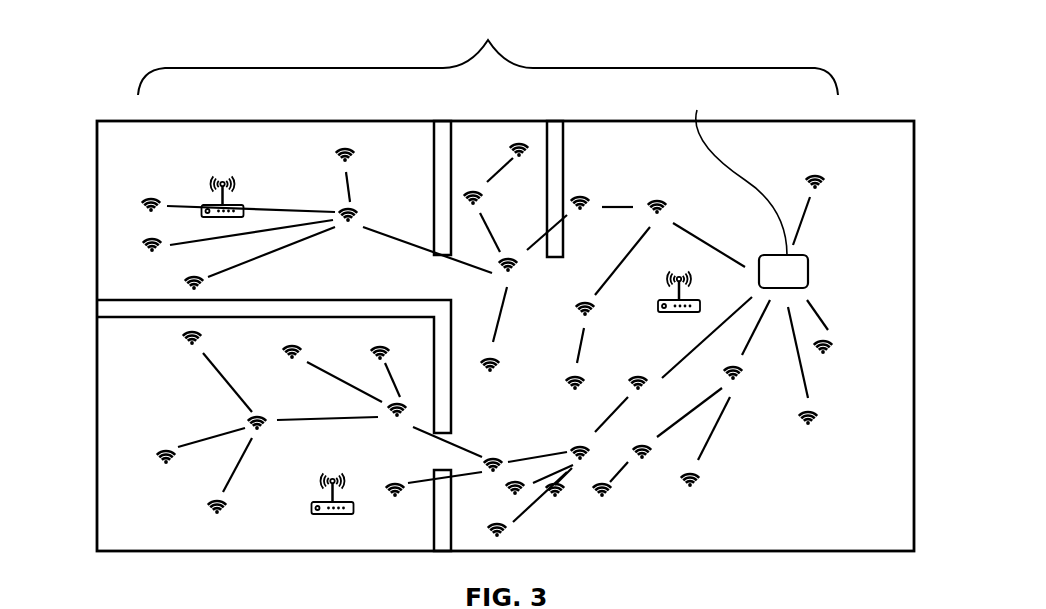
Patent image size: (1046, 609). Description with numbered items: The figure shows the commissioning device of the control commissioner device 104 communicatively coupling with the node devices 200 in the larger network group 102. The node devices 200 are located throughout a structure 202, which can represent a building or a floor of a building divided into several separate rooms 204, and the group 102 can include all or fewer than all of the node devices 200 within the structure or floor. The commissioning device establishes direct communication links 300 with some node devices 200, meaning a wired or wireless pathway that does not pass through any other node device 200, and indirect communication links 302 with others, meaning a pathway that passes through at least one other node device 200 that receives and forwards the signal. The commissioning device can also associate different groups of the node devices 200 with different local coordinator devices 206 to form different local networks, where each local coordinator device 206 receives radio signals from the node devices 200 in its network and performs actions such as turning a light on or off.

The larger network group 102 is at (488, 52).
The control commissioner device 104 is at (810, 272).
The node device 200 is at (350, 223).
The structure 202 is at (915, 267).
The room 204 is at (133, 410).
The local coordinator device 206 is at (678, 315).
The direct communication link 300 is at (710, 245).
The indirect communication link 302 is at (328, 420).